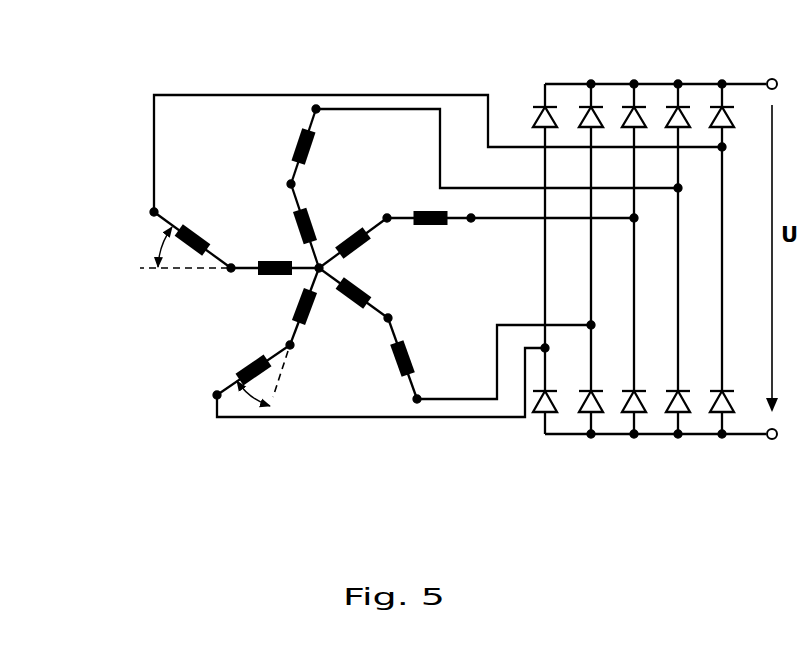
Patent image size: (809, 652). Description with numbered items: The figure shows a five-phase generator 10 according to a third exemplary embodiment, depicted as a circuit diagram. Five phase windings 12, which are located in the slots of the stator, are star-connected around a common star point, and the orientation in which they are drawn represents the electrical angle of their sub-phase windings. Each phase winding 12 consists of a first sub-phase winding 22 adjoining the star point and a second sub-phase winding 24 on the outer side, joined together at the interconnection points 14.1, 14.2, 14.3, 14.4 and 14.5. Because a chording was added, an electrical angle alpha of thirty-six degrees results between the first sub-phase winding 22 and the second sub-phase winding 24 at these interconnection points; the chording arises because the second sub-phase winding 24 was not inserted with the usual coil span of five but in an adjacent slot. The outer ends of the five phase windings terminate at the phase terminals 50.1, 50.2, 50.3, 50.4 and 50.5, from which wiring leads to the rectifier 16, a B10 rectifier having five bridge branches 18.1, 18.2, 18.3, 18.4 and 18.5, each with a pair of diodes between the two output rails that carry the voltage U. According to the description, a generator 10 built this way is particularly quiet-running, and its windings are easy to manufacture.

The generator 10 is at (311, 455).
The phase winding 12 is at (388, 168).
The interconnection point 14.1 is at (289, 184).
The interconnection point 14.2 is at (389, 219).
The interconnection point 14.3 is at (390, 318).
The interconnection point 14.4 is at (292, 345).
The interconnection point 14.5 is at (231, 270).
The rectifier 16 is at (642, 480).
The bridge branch 18.1 is at (545, 446).
The bridge branch 18.2 is at (591, 446).
The bridge branch 18.3 is at (634, 446).
The bridge branch 18.4 is at (678, 446).
The bridge branch 18.5 is at (723, 446).
The first sub-phase winding 22 is at (323, 224).
The second sub-phase winding 24 is at (282, 131).
The phase terminal 50.1 is at (314, 108).
The phase terminal 50.2 is at (472, 220).
The phase terminal 50.3 is at (419, 397).
The phase terminal 50.4 is at (215, 396).
The phase terminal 50.5 is at (160, 212).